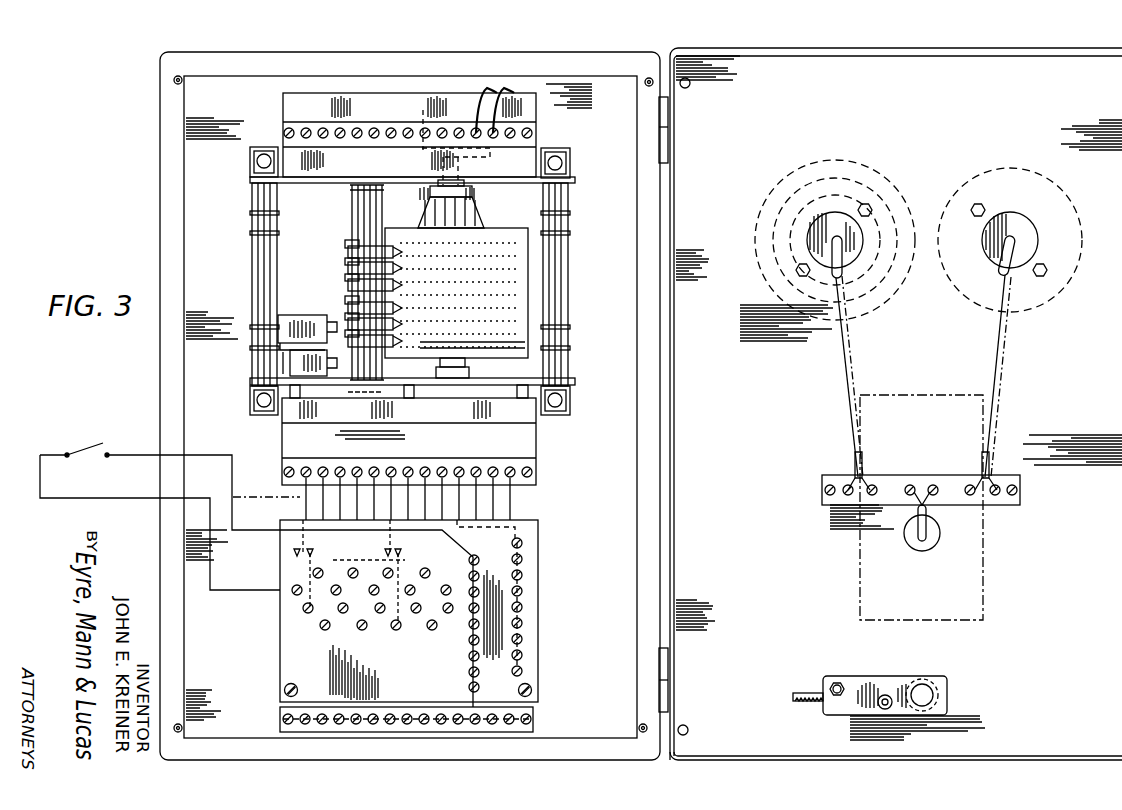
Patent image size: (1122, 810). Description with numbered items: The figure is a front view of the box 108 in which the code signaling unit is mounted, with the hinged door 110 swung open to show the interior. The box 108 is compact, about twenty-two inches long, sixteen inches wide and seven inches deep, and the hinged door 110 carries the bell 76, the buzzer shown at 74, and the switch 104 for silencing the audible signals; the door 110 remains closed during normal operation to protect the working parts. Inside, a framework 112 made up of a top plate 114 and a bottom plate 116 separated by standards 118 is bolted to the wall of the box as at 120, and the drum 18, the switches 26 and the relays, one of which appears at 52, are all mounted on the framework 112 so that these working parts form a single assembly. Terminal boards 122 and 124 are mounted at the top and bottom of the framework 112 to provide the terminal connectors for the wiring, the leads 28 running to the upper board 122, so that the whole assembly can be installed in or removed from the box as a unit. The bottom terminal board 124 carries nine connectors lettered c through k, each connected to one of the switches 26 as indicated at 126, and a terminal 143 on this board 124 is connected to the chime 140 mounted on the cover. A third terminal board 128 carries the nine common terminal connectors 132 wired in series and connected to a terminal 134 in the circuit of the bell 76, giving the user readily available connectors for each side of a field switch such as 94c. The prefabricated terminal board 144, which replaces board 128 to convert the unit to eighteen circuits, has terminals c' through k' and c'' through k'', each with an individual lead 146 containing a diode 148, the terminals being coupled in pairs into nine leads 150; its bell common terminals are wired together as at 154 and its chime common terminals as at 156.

The box 108 is at (163, 118).
The hinged door 110 is at (892, 60).
The framework 112 is at (398, 293).
The top plate 114 is at (575, 181).
The bottom plate 116 is at (575, 383).
The standards 118 is at (253, 279).
The bolts 120 is at (570, 160).
The terminal board 122 is at (537, 133).
The bottom terminal board 124 is at (432, 441).
The switch connection 126 is at (398, 441).
The third terminal board 128 is at (280, 721).
The common terminal connectors 132 is at (428, 719).
The terminal 134 is at (460, 467).
The terminal 143 is at (494, 467).
The prefabricated terminal board 144 is at (405, 613).
The individual lead 146 is at (308, 556).
The diode 148 is at (302, 552).
The leads 150 is at (538, 497).
The bell common terminal wiring 154 is at (469, 688).
The chime common terminal wiring 156 is at (523, 671).
The drum 18 is at (510, 234).
The switches 26 is at (350, 298).
The power leads 28 is at (477, 110).
The relay 52 is at (304, 313).
The field switch 94c is at (90, 446).
The dial 74 is at (888, 184).
The bell 76 is at (1052, 205).
The chime 140 is at (967, 582).
The switch 104 is at (947, 688).